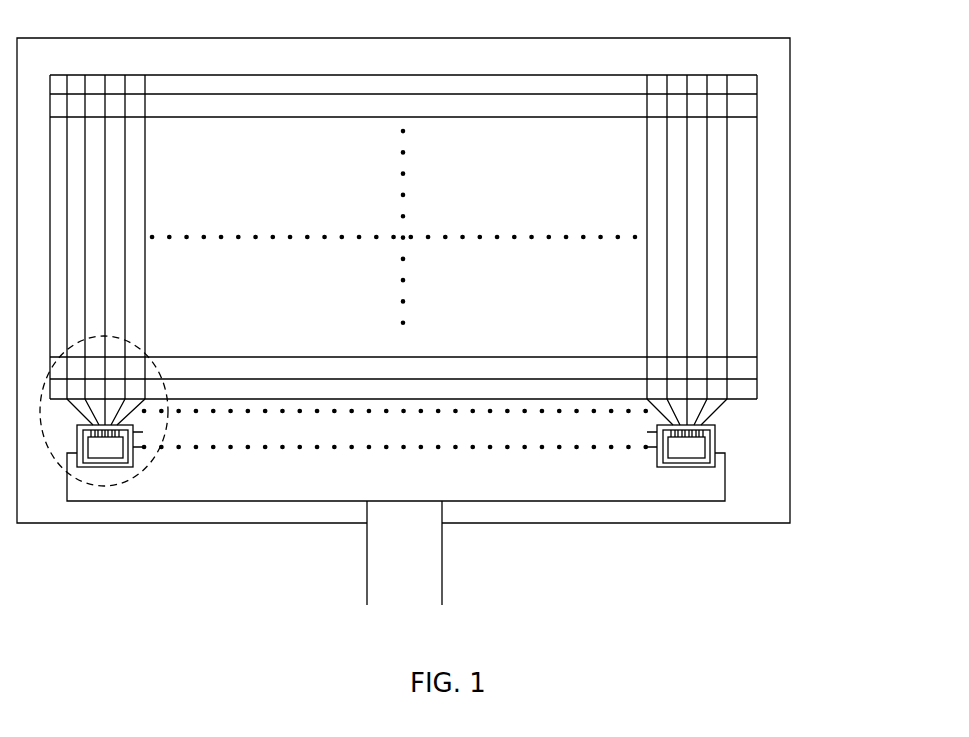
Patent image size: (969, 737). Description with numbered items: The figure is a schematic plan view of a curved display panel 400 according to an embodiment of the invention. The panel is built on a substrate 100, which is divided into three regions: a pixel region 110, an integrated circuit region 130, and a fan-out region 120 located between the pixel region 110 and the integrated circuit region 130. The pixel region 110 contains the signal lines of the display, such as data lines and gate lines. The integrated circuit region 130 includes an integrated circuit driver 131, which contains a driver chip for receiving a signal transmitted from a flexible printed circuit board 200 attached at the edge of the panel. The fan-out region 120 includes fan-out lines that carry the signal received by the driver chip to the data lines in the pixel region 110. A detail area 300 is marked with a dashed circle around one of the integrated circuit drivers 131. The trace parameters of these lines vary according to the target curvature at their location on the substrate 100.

The substrate 100 is at (773, 57).
The pixel region 110 is at (757, 75).
The fan-out region 120 is at (757, 399).
The integrated circuit region 130 is at (725, 501).
The integrated circuit driver 131 is at (690, 467).
The flexible printed circuit board 200 is at (427, 573).
The test pad region 300 is at (106, 487).
The curved display panel 400 is at (261, 532).